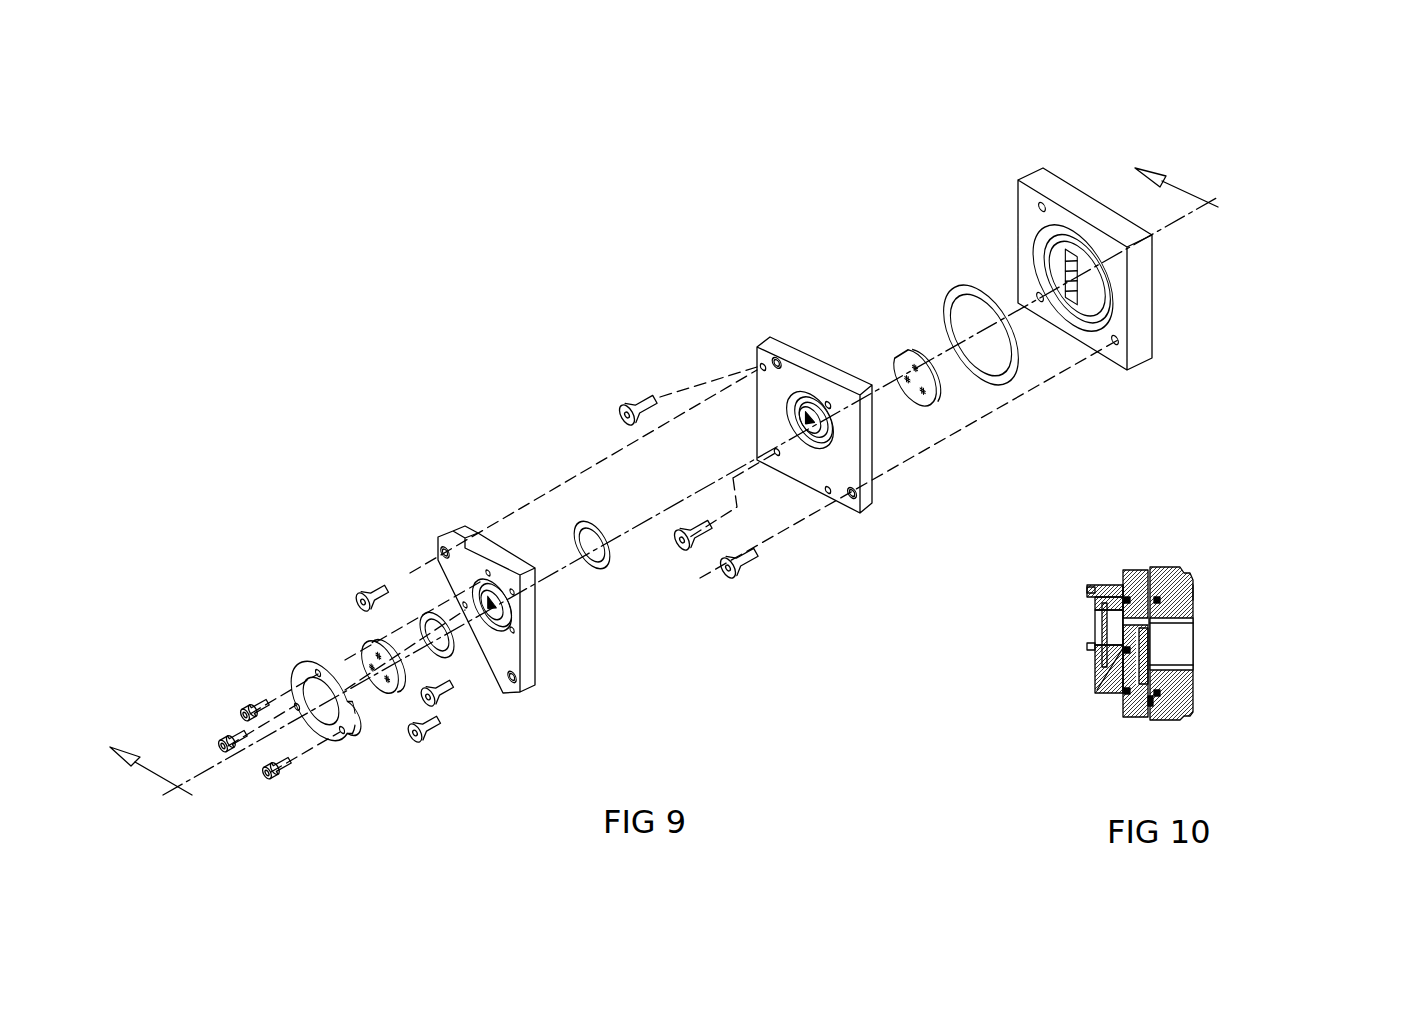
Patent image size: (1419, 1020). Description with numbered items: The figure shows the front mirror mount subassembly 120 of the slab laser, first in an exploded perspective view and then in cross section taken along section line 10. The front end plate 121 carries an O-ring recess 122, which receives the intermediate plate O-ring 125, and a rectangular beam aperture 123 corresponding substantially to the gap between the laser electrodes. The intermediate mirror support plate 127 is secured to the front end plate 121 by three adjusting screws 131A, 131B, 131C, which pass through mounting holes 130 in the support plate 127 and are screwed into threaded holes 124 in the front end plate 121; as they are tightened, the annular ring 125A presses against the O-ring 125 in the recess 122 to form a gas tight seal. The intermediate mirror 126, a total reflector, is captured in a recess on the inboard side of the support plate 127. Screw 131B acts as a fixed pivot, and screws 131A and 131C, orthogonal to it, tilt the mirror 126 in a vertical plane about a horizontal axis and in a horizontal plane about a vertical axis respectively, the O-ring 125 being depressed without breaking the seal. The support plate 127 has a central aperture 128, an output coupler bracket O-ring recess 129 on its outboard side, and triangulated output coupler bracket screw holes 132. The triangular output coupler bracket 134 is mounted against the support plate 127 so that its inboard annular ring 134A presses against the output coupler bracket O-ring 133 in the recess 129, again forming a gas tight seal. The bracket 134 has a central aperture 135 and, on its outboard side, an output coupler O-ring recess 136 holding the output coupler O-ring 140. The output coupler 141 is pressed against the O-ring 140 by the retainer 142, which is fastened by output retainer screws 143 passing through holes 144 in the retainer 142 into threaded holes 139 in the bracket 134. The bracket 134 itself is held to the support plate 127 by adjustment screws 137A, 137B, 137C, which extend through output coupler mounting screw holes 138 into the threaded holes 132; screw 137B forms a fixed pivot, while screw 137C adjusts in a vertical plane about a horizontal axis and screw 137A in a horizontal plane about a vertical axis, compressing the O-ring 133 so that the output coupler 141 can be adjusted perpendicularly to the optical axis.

In FIG. 9, the section line 10 is at (651, 465).
In FIG. 9, the front mirror mount subassembly 120 is at (442, 325).
In FIG. 10, the front mirror mount subassembly 120 is at (1252, 695).
In FIG. 9, the front end plate 121 is at (1037, 178).
In FIG. 10, the front end plate 121 is at (1180, 565).
In FIG. 9, the O-ring recess 122 is at (1108, 312).
In FIG. 10, the O-ring recess 122 is at (1193, 592).
In FIG. 9, the rectangular beam aperture 123 is at (1070, 266).
In FIG. 10, the rectangular beam aperture 123 is at (1175, 645).
In FIG. 9, the threaded holes 124 is at (1040, 207).
In FIG. 9, the intermediate plate O-ring 125 is at (1007, 373).
In FIG. 10, the intermediate plate O-ring 125 is at (1160, 707).
In FIG. 10, the annular ring 125A is at (1165, 570).
In FIG. 9, the intermediate mirror 126 is at (925, 402).
In FIG. 10, the intermediate mirror 126 is at (1135, 717).
In FIG. 9, the intermediate mirror support plate 127 is at (778, 343).
In FIG. 10, the intermediate mirror support plate 127 is at (1135, 572).
In FIG. 9, the central aperture 128 is at (808, 417).
In FIG. 9, the output coupler bracket O-ring recess 129 is at (828, 408).
In FIG. 9, the mounting holes 130 is at (770, 363).
In FIG. 9, the adjusting screw 131A is at (623, 404).
In FIG. 10, the adjusting screw 131A is at (1120, 578).
In FIG. 9, the fixed pivot screw 131B is at (680, 551).
In FIG. 10, the fixed pivot screw 131B is at (1123, 697).
In FIG. 9, the adjusting screw 131C is at (740, 575).
In FIG. 9, the output coupler bracket screw holes 132 is at (828, 490).
In FIG. 9, the output coupler bracket O-ring 133 is at (597, 568).
In FIG. 10, the output coupler bracket O-ring 133 is at (1110, 690).
In FIG. 9, the output coupler bracket 134 is at (450, 540).
In FIG. 10, the output coupler bracket 134 is at (1098, 595).
In FIG. 10, the annular ring 134A is at (1122, 585).
In FIG. 9, the central aperture 135 is at (600, 703).
In FIG. 9, the output coupler O-ring recess 136 is at (484, 582).
In FIG. 9, the adjustment screw 137A is at (361, 594).
In FIG. 9, the adjustment screw 137B is at (434, 704).
In FIG. 9, the adjustment screw 137C is at (419, 741).
In FIG. 9, the output coupler mounting screw holes 138 is at (443, 548).
In FIG. 9, the threaded holes 139 is at (463, 603).
In FIG. 9, the output coupler O-ring 140 is at (415, 628).
In FIG. 10, the output coupler O-ring 140 is at (1124, 655).
In FIG. 9, the output coupler 141 is at (363, 660).
In FIG. 10, the output coupler 141 is at (1102, 628).
In FIG. 9, the retainer 142 is at (357, 720).
In FIG. 9, the output retainer screws 143 is at (270, 778).
In FIG. 10, the output retainer screws 143 is at (1087, 590).
In FIG. 9, the holes 144 is at (342, 735).